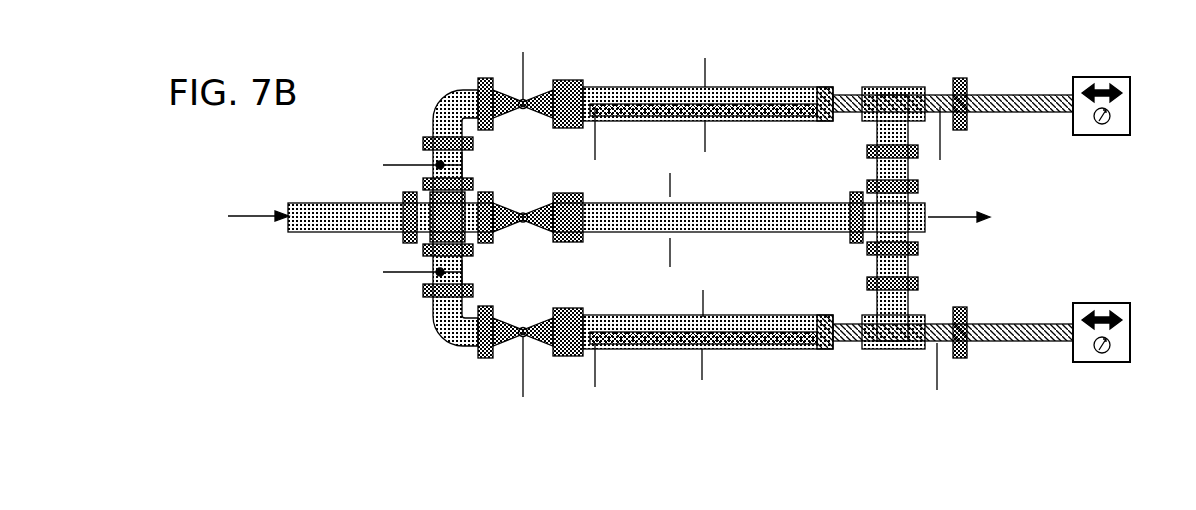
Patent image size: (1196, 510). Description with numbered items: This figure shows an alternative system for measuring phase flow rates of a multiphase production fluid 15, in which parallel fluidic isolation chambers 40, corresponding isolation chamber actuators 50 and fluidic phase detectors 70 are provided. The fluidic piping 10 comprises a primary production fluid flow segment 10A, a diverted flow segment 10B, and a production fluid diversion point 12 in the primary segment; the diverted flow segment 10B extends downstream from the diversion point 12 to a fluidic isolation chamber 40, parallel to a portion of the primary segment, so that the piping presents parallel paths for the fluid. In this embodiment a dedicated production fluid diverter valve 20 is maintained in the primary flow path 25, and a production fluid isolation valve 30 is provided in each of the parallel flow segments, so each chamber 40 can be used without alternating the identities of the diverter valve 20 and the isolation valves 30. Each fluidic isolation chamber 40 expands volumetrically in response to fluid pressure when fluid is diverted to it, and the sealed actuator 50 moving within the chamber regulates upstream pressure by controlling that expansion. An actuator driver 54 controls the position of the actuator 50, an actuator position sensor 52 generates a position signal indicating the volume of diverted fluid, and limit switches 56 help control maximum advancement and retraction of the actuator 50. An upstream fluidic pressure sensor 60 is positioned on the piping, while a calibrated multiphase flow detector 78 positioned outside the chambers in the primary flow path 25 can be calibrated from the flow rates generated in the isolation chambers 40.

The fluidic piping 10 is at (368, 202).
The primary production fluid flow segment 10A is at (458, 118).
The diverted flow segment 10B is at (458, 319).
The production fluid diversion point 12 is at (448, 217).
The multiphase production fluid 15 is at (240, 212).
The production fluid diverter valve 20 is at (525, 223).
The primary flow path 25 is at (950, 220).
The production fluid isolation valve 30 is at (525, 110).
The fluidic isolation chamber 40 is at (746, 122).
The isolation chamber actuator 50 is at (1020, 113).
The actuator position sensor 52 is at (1103, 126).
The actuator driver 54 is at (1100, 93).
The limit switches 56 is at (596, 113).
The upstream fluidic pressure sensor 60 is at (441, 166).
The fluidic phase detectors 70 is at (704, 84).
The calibrated multiphase flow detector 78 is at (668, 197).